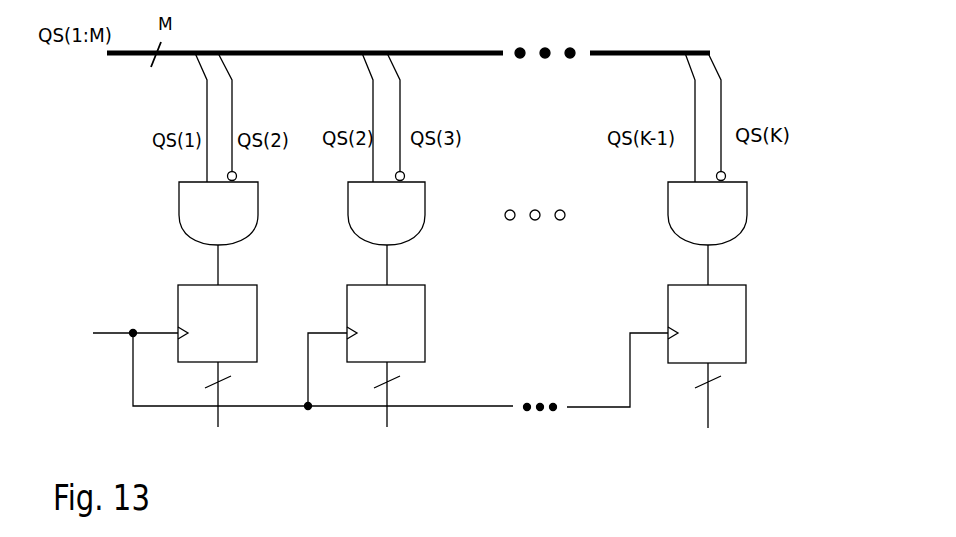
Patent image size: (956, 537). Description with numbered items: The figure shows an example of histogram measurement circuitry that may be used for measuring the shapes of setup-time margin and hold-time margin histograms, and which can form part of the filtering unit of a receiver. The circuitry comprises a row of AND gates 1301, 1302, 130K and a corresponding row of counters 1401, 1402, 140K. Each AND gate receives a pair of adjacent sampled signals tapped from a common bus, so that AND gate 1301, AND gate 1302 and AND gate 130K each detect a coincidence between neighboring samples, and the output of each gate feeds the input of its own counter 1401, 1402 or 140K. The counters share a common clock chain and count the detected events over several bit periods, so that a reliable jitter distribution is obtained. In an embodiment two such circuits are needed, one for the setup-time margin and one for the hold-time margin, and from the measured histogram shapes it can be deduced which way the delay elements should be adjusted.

The AND gate 1301 is at (258, 192).
The AND gate 1302 is at (425, 192).
The AND gate 130K is at (747, 192).
The counter 1401 is at (257, 294).
The counter 1402 is at (425, 294).
The counter 140K is at (746, 294).